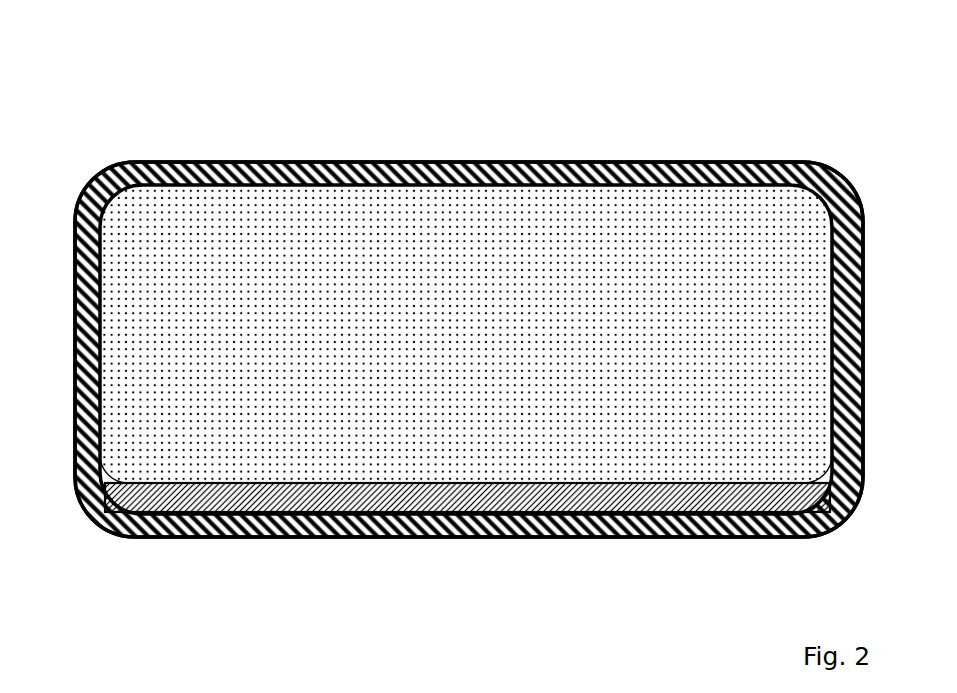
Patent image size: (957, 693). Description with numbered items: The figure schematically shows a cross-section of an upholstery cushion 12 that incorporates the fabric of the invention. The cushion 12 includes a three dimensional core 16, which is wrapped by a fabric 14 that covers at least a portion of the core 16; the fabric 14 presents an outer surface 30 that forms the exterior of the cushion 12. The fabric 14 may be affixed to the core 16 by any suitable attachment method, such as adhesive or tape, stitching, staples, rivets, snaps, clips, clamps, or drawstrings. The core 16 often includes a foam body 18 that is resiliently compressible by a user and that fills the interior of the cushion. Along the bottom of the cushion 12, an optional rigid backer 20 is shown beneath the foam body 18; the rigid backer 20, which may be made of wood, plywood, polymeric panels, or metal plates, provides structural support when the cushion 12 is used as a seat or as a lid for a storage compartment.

The upholstery cushion 12 is at (458, 344).
The fabric 14 is at (613, 177).
The outer surface 30 is at (400, 162).
The three dimensional core 16 is at (466, 295).
The foam body 18 is at (471, 306).
The rigid backer 20 is at (295, 503).